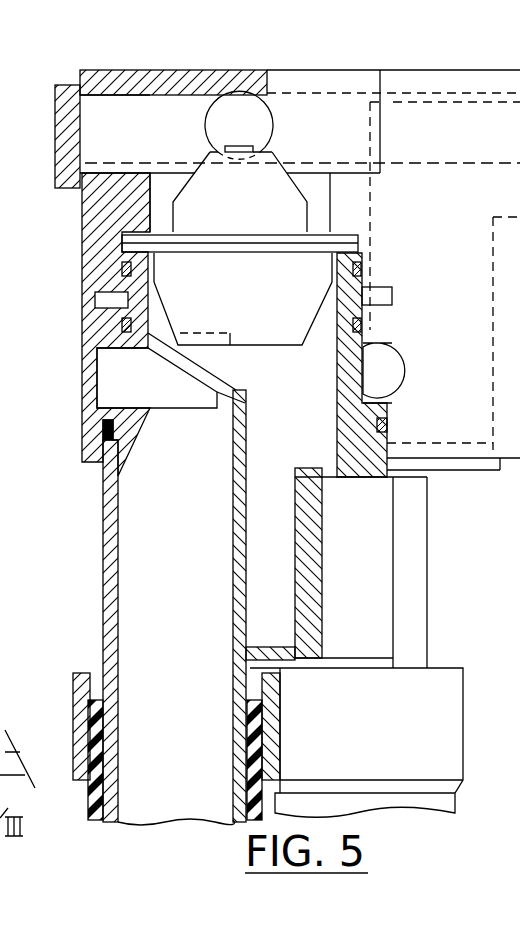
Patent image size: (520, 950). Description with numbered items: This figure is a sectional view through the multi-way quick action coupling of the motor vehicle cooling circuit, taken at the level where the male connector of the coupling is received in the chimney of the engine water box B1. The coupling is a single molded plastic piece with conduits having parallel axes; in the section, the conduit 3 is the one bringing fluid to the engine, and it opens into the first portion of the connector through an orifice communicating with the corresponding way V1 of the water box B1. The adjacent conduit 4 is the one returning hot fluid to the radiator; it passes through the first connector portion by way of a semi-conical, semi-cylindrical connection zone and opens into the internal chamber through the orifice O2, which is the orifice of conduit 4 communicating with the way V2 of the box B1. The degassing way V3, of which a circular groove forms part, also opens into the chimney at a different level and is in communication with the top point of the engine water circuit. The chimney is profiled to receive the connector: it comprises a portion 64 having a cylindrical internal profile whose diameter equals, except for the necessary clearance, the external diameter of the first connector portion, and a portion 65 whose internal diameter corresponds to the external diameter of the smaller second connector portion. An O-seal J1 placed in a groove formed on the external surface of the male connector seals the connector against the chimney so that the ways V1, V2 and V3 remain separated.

The way V2 of the water box V2 is at (240, 122).
The water box of the engine B1 is at (462, 88).
The portion of the chimney 65 is at (82, 262).
The orifice O2 is at (269, 262).
The way V1 of the water box V1 is at (165, 400).
The degassing way V3 is at (383, 372).
The O-seal J1 is at (388, 424).
The portion of the chimney 64 is at (102, 438).
The conduit 4 is at (300, 438).
The conduit 3 is at (187, 555).